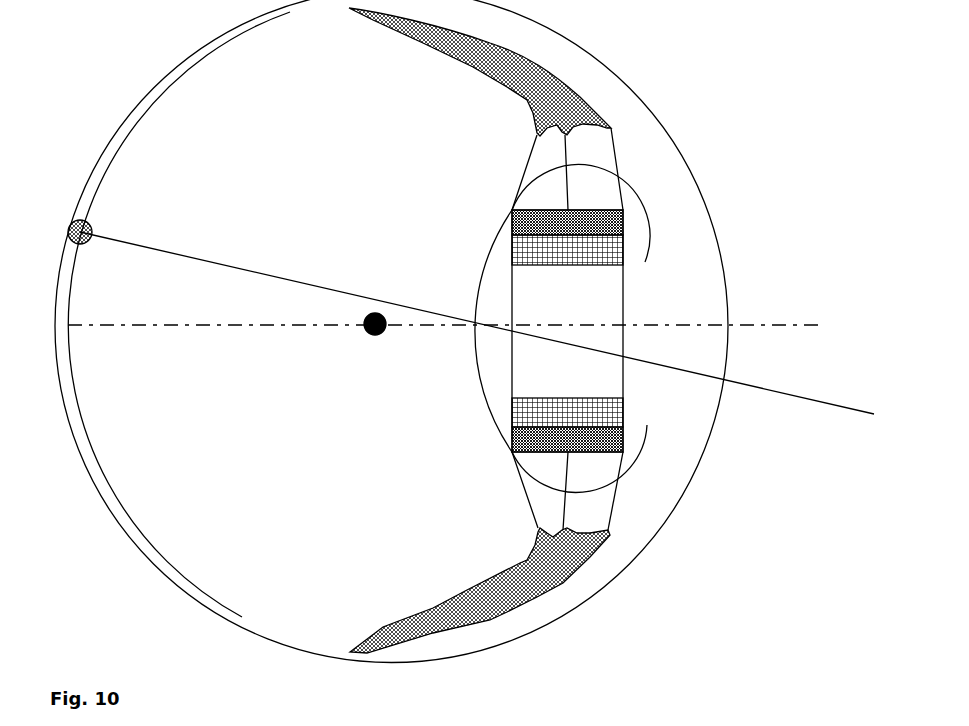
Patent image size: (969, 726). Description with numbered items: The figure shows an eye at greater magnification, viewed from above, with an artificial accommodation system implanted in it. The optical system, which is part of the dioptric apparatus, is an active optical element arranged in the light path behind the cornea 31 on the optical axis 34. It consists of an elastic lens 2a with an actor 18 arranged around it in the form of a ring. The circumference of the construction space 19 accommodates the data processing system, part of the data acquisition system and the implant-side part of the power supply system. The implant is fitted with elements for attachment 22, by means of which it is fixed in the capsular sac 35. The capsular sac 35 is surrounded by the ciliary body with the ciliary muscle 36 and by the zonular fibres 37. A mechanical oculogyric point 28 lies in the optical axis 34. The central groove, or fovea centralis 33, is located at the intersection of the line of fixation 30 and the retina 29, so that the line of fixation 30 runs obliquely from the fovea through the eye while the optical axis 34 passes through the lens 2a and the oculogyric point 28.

The elastic lens 2a is at (545, 300).
The actor 18 is at (540, 253).
The construction space 19 is at (543, 217).
The elements for attachment 22 is at (568, 475).
The mechanical oculogyric point 28 is at (365, 333).
The retina 29 is at (128, 130).
The line of fixation 30 is at (272, 272).
The cornea 31 is at (727, 257).
The central groove (fovea centralis) 33 is at (70, 227).
The optical axis 34 is at (198, 327).
The capsular sac 35 is at (487, 390).
The ciliary body with ciliary muscle 36 is at (500, 598).
The zonular fibres 37 is at (613, 497).